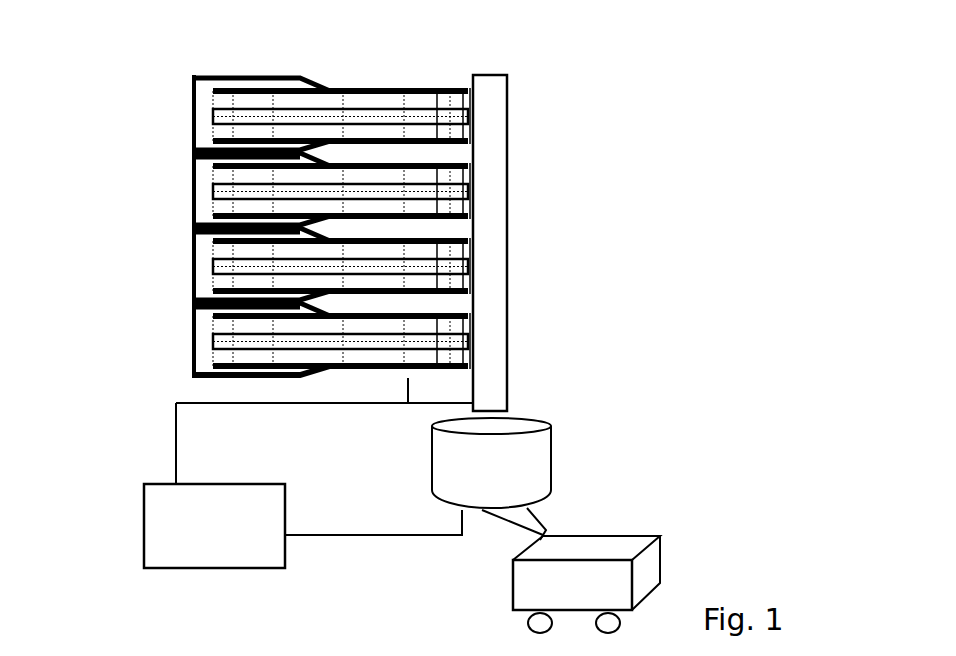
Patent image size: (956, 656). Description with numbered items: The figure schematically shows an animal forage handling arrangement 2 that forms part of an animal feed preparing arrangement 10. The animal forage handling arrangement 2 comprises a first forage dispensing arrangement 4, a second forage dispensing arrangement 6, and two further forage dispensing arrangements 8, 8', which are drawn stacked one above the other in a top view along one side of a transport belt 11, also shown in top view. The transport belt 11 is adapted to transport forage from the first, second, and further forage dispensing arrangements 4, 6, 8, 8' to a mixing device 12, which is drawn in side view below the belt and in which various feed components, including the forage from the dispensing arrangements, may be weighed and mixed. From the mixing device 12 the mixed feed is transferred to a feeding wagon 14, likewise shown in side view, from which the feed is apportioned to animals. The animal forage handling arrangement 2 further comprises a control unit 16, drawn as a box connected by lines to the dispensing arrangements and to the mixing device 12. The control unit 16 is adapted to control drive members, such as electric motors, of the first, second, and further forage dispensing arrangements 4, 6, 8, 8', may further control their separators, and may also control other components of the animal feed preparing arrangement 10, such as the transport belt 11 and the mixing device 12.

The animal forage handling arrangement 2 is at (95, 60).
The first forage dispensing arrangement 4 is at (212, 120).
The second forage dispensing arrangement 6 is at (207, 190).
The further forage dispensing arrangement 8 is at (277, 286).
The further forage dispensing arrangement 8' is at (276, 363).
The animal feed preparing arrangement 10 is at (620, 105).
The transport belt 11 is at (489, 230).
The mixing device 12 is at (530, 468).
The feeding wagon 14 is at (535, 578).
The control unit 16 is at (232, 546).